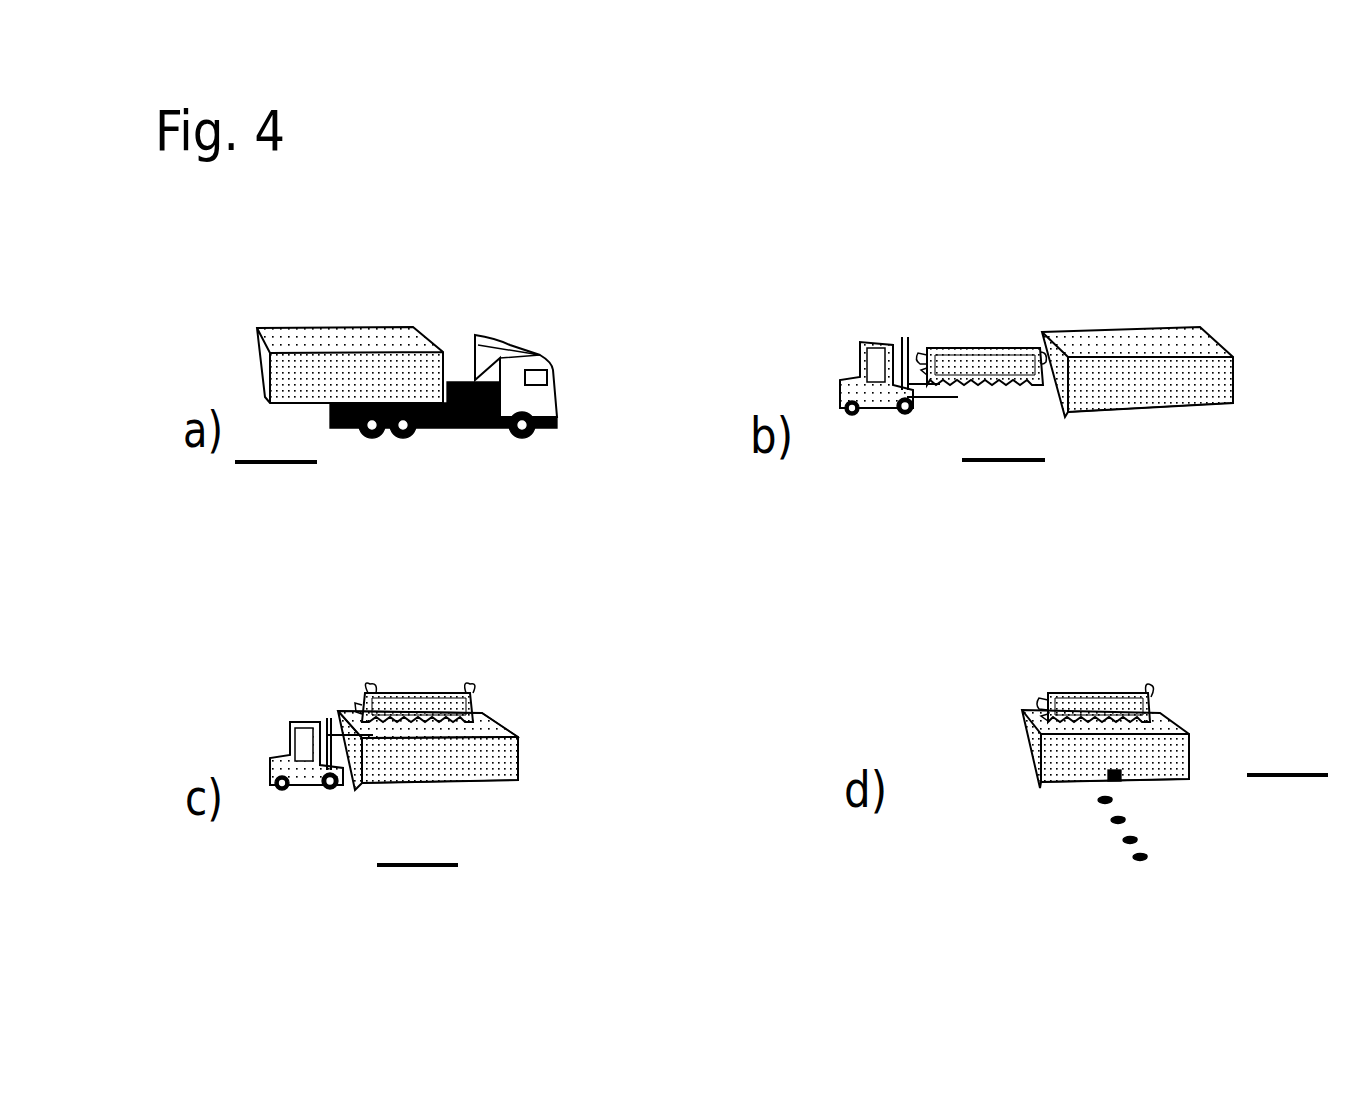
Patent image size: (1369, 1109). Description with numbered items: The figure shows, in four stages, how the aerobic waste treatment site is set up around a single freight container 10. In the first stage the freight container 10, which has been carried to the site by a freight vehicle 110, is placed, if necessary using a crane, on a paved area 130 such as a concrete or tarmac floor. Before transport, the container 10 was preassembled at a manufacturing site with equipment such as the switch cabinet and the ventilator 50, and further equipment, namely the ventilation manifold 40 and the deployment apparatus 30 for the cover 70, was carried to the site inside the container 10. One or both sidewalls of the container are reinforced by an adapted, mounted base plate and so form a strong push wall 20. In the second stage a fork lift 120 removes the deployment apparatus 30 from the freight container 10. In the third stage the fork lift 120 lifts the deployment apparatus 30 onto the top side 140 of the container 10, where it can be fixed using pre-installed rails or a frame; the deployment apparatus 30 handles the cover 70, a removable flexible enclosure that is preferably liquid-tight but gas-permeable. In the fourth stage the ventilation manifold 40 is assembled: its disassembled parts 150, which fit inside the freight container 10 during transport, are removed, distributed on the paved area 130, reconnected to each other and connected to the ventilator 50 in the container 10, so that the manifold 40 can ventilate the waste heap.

The freight container 10 is at (383, 304).
The push wall 20 is at (1190, 382).
The deployment apparatus 30 is at (980, 342).
The ventilation manifold 40 is at (1095, 858).
The ventilator 50 is at (1098, 784).
The cover 70 is at (1005, 357).
The freight vehicle 110 is at (556, 336).
The fork lift 120 is at (867, 424).
The paved area 130 is at (781, 635).
The top side 140 is at (482, 725).
The disassembled parts 150 is at (1122, 800).